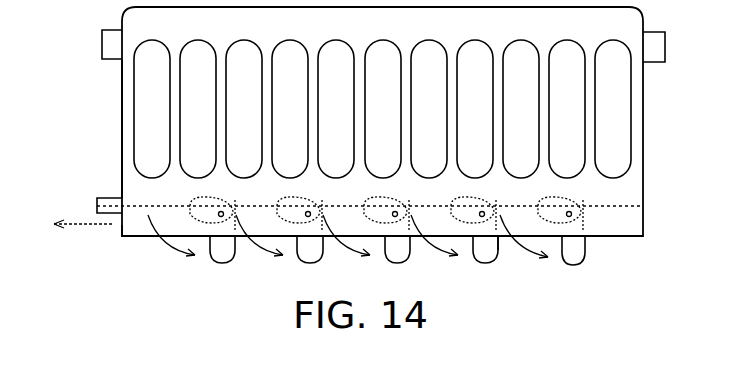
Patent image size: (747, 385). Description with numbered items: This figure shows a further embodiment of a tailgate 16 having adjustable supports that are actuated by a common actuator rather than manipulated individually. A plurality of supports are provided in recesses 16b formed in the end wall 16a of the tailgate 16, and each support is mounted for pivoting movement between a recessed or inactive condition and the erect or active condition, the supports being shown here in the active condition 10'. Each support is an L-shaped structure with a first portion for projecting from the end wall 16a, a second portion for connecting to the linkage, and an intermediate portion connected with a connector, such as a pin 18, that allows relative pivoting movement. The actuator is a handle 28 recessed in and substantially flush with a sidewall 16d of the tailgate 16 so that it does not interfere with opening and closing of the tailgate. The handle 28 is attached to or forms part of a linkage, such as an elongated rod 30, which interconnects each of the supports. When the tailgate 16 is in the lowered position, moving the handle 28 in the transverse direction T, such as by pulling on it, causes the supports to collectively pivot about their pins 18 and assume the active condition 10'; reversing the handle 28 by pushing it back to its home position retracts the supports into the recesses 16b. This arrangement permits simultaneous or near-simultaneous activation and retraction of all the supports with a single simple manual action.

The tailgate 16 is at (662, 118).
The end wall 16a is at (630, 238).
The recess 16b is at (508, 240).
The sidewall 16d is at (120, 122).
The pin 18 is at (220, 217).
The handle 28 is at (97, 206).
The elongated rod 30 is at (141, 236).
The support in the active condition 10' is at (428, 262).
The transverse direction T is at (83, 233).